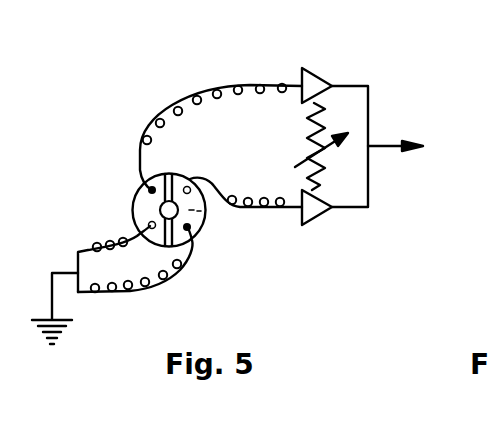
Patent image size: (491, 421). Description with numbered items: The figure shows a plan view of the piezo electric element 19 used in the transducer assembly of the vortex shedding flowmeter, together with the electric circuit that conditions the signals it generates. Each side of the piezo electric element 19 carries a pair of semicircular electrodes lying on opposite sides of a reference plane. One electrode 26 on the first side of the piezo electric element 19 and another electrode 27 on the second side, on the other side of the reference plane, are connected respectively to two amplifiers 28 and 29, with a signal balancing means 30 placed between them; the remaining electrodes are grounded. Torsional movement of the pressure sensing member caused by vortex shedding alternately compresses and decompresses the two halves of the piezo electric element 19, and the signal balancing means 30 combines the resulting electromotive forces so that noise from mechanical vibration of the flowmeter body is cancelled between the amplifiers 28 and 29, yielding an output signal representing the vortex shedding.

The piezo electric element 19 is at (126, 222).
The electrode 26 is at (133, 202).
The second coil winding 27 is at (205, 213).
The amplifier 28 is at (315, 72).
The amplifier 29 is at (320, 215).
The signal balancing means 30 is at (360, 107).